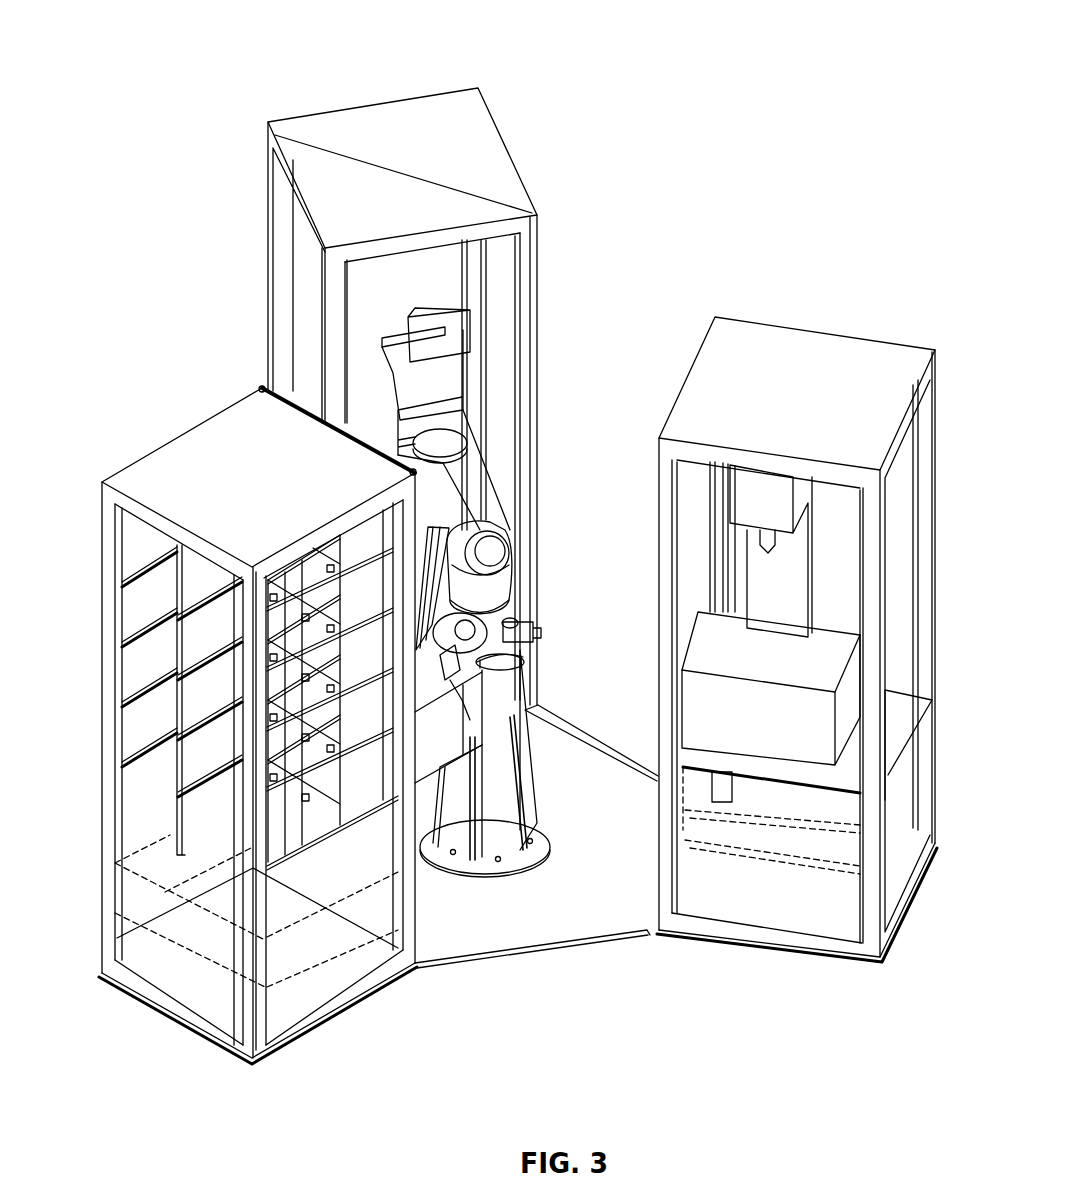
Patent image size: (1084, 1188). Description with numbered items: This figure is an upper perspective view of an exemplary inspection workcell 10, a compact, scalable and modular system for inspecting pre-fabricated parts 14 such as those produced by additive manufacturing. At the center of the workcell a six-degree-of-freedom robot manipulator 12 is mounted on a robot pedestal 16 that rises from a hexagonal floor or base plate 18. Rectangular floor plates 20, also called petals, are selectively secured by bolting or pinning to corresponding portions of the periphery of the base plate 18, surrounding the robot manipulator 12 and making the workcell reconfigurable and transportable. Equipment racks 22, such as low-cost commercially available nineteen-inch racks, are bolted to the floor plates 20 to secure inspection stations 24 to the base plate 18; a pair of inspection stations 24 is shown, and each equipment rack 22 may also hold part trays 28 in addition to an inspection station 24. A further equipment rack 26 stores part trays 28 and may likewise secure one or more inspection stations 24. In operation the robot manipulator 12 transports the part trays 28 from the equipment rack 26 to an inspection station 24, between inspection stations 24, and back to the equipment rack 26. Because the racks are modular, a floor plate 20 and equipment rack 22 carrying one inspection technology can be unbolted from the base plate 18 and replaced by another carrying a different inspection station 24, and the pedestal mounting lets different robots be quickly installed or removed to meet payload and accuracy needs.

The inspection workcell 10 is at (700, 66).
The robot manipulator 12 is at (560, 530).
The pre-fabricated parts 14 is at (397, 527).
The robot pedestal 16 is at (535, 765).
The base plate 18 is at (555, 948).
The floor plate 20 is at (413, 977).
The equipment rack 22 is at (415, 80).
The inspection station 24 is at (560, 282).
The equipment rack 26 is at (112, 425).
The part trays 28 is at (300, 590).